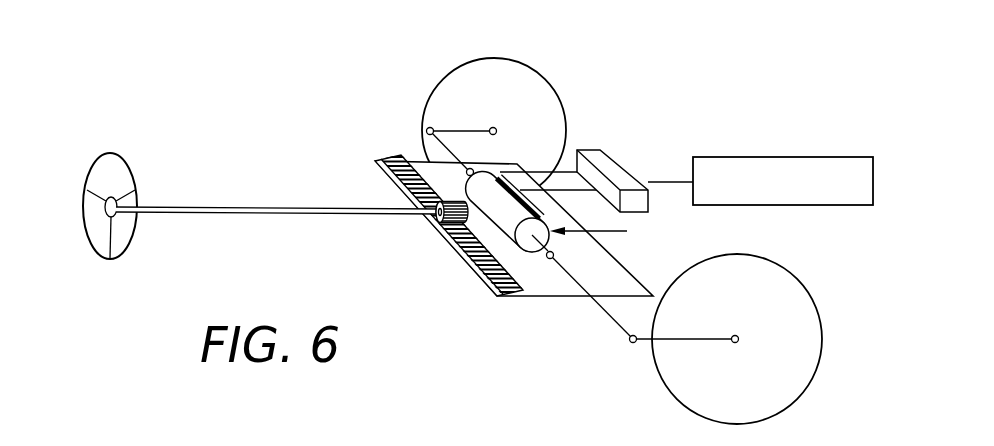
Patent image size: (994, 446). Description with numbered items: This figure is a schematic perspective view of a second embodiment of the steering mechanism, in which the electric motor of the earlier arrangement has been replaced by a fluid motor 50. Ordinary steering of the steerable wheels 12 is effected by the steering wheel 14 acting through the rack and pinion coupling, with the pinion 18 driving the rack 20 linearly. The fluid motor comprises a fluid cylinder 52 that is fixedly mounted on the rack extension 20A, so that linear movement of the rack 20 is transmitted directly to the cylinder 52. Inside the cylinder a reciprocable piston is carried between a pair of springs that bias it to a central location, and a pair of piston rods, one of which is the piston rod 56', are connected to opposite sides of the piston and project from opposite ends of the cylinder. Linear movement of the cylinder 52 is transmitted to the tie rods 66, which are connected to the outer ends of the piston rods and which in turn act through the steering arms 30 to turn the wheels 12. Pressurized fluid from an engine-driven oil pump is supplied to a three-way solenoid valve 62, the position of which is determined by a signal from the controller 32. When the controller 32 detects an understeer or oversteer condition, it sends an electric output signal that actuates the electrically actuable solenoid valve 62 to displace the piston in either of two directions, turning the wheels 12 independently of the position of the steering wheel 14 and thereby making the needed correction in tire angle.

The steerable wheels 12 is at (544, 77).
The steering wheel 14 is at (110, 260).
The pinion 18 is at (442, 228).
The rack 20 is at (380, 176).
The rack extension 20A is at (637, 278).
The steering arm 30 is at (463, 130).
The controller 32 is at (784, 157).
The fluid motor 50 is at (599, 232).
The fluid cylinder 52 is at (507, 222).
The piston rod 56' is at (529, 303).
The three-way solenoid valve 62 is at (613, 165).
The tie rods 66 is at (440, 148).